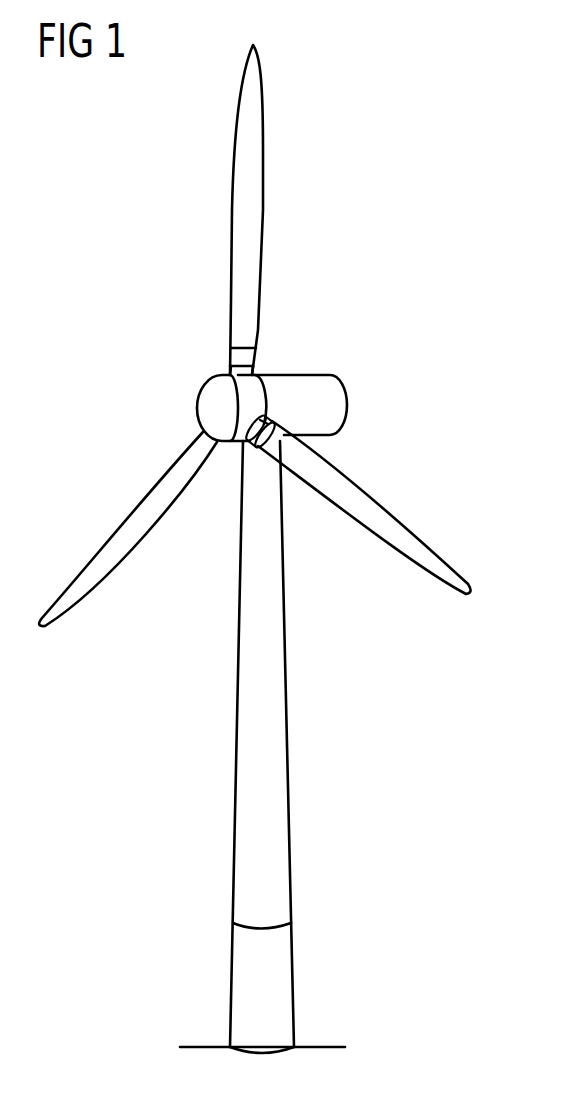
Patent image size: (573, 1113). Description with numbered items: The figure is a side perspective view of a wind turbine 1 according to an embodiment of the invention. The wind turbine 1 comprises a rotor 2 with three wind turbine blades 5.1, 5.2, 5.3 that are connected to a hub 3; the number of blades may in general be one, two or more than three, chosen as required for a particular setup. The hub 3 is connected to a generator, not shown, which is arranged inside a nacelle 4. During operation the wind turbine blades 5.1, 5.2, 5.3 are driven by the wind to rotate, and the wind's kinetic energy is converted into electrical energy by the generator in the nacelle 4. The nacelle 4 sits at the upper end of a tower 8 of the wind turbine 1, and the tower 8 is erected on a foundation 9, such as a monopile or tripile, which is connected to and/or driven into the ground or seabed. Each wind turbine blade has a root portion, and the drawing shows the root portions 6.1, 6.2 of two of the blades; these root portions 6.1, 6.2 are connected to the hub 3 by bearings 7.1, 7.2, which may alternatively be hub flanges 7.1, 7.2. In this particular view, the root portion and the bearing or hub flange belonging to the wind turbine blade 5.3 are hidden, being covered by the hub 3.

The wind turbine 1 is at (466, 209).
The rotor 2 is at (150, 379).
The hub 3 is at (204, 415).
The nacelle 4 is at (337, 407).
The wind turbine blade 5.1 is at (252, 156).
The wind turbine blade 5.2 is at (398, 528).
The wind turbine blade 5.3 is at (127, 529).
The root portion 6.1 is at (231, 359).
The root portion 6.2 is at (268, 417).
The bearing 7.1 is at (252, 371).
The bearing 7.2 is at (251, 428).
The tower 8 is at (275, 715).
The foundation 9 is at (283, 1003).